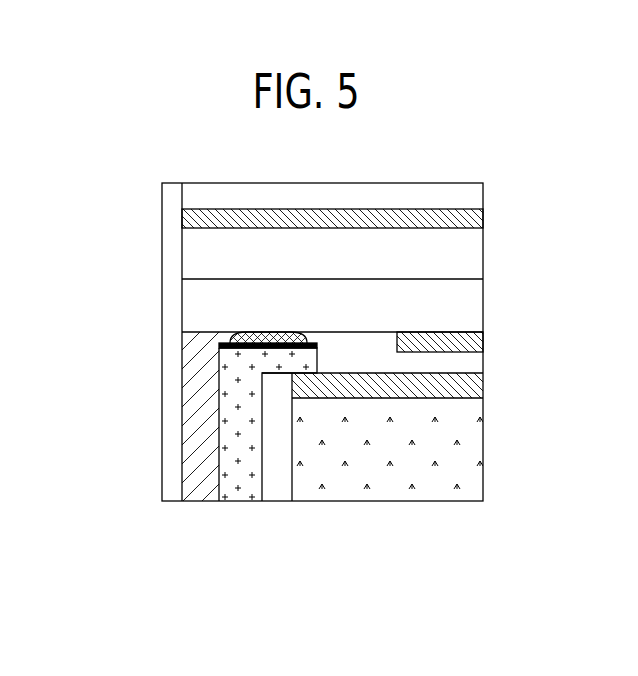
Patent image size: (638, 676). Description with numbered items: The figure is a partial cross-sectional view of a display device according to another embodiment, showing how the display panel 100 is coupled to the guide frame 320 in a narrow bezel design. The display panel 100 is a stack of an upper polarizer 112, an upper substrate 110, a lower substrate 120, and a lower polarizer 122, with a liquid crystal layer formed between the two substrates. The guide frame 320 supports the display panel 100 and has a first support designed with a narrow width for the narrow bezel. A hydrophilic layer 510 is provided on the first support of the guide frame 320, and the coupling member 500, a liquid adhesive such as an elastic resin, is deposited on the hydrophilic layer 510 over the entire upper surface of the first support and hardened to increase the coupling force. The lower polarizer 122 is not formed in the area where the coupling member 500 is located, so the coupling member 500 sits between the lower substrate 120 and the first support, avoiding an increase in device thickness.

The display panel 100 is at (85, 195).
The upper substrate 110 is at (196, 254).
The upper polarizer 112 is at (192, 214).
The lower substrate 120 is at (196, 302).
The lower polarizer 122 is at (428, 332).
The guide frame 320 is at (243, 479).
The coupling member 500 is at (230, 338).
The hydrophilic layer 510 is at (287, 348).